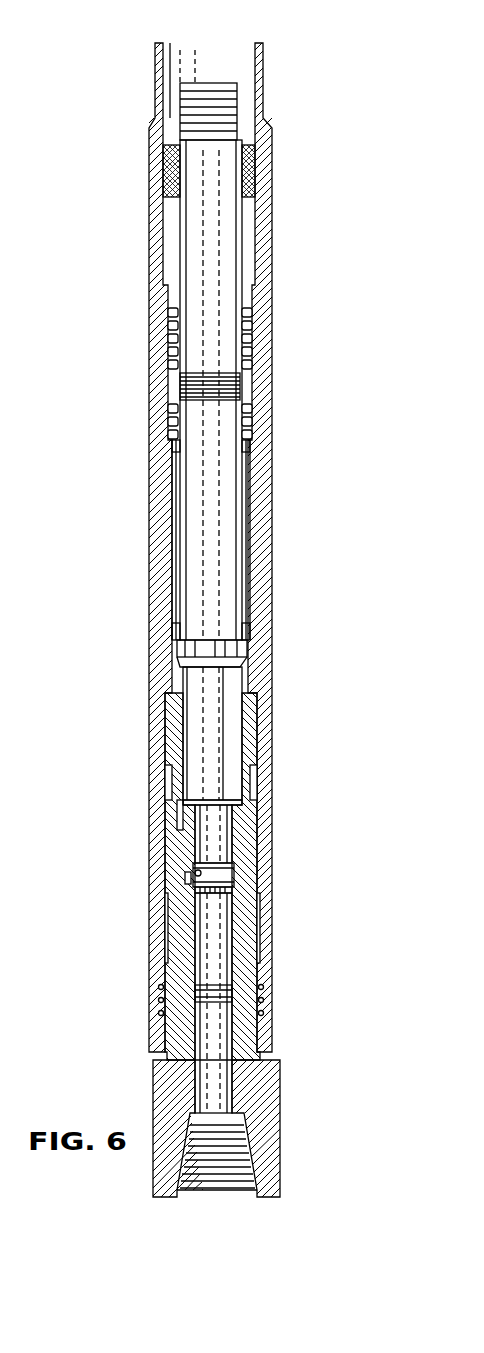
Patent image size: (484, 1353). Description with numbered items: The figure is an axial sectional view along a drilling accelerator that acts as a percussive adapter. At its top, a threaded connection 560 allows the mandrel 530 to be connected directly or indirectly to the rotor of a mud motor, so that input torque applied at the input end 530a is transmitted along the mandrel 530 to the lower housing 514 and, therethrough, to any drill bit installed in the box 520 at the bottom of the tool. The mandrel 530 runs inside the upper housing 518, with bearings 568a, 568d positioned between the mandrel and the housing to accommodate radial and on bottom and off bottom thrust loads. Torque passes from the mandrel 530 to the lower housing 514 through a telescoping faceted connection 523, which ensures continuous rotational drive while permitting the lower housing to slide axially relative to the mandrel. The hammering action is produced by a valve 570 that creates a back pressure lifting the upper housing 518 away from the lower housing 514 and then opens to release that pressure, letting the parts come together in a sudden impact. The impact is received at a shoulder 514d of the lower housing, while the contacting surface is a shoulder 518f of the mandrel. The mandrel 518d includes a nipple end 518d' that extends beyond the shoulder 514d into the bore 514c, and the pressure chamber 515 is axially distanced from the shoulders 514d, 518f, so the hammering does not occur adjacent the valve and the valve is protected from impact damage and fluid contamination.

The threaded connection 560 is at (222, 101).
The input end 530a is at (212, 162).
The bearing 568a is at (243, 340).
The mandrel 530 is at (208, 513).
The upper housing 518 is at (259, 563).
The bearing 568d is at (246, 603).
The mandrel 518d is at (279, 736).
The lower housing 514 is at (250, 752).
The telescoping faceted connection 523 is at (255, 778).
The shoulder 518f is at (183, 808).
The shoulder 514d is at (240, 808).
The bore 514c is at (190, 878).
The nipple end 518d' is at (287, 874).
The pressure chamber 515 is at (258, 890).
The valve 570 is at (212, 933).
The box 520 is at (215, 1142).